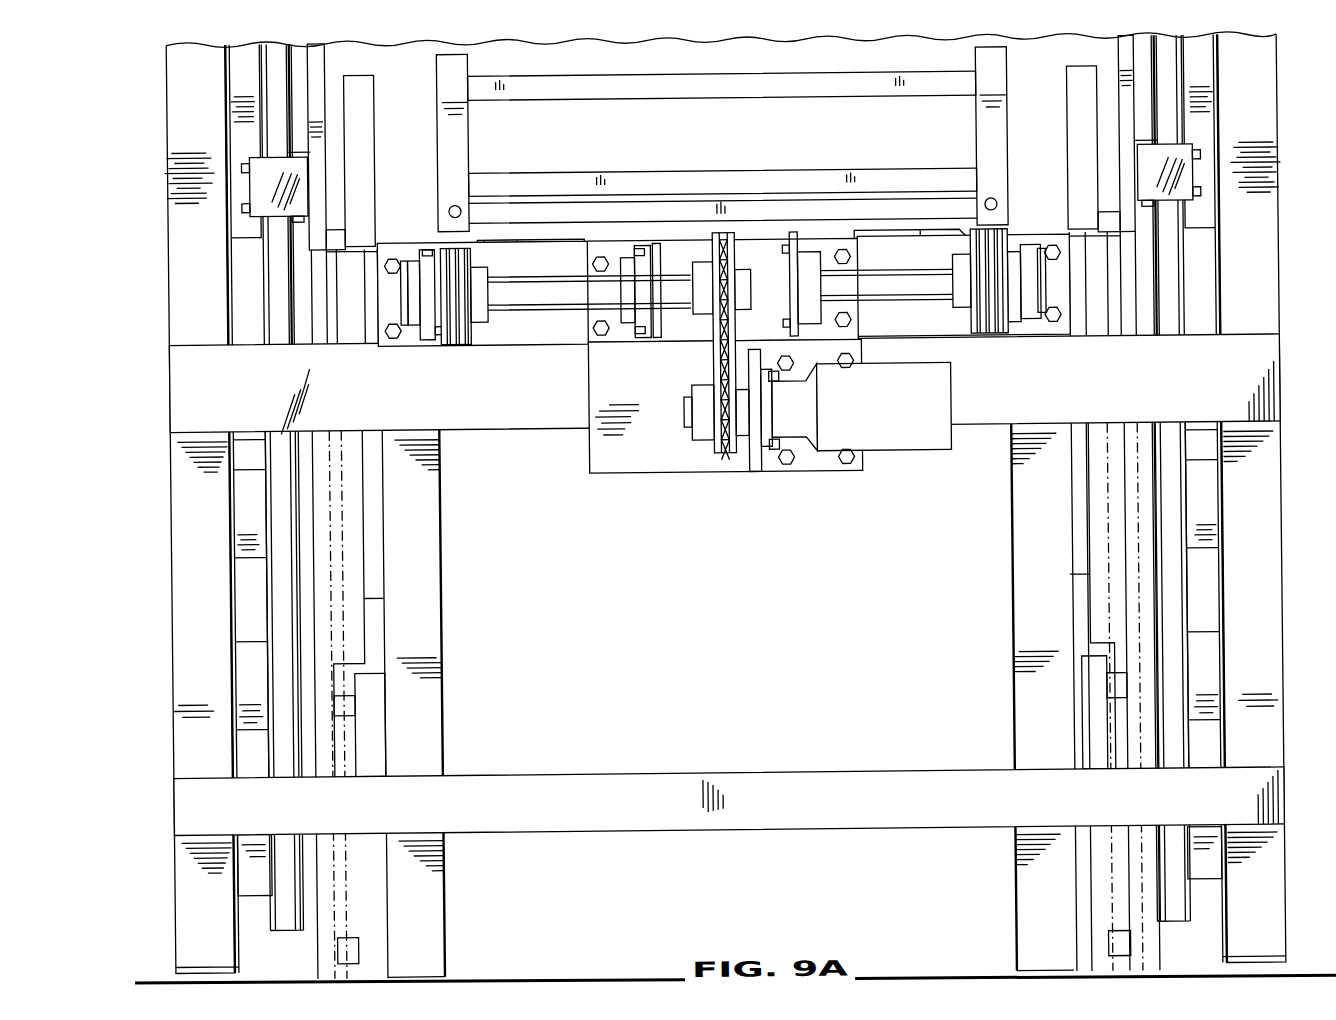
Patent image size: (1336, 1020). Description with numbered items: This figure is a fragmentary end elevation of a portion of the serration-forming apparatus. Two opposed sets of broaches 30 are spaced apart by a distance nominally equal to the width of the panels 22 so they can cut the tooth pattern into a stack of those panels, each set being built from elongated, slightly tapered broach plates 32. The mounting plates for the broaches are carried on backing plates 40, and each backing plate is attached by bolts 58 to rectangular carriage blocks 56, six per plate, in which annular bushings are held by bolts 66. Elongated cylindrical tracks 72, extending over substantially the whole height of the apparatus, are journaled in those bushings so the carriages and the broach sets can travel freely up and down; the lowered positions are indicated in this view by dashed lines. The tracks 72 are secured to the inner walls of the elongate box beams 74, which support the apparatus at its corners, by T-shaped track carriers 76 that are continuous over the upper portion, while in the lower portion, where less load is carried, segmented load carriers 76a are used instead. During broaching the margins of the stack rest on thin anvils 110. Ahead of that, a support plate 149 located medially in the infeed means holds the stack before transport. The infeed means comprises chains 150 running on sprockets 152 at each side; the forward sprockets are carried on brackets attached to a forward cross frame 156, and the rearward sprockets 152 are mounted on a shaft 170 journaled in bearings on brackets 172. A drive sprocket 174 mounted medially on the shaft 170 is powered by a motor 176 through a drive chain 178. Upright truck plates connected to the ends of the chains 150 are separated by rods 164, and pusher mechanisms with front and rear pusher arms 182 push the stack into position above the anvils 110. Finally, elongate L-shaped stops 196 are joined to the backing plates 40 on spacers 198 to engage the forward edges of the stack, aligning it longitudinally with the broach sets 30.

The panels 22 is at (362, 44).
The broaches 30 is at (366, 518).
The broach plates 32 is at (365, 594).
The backing plates 40 is at (324, 169).
The carriage blocks 56 is at (260, 176).
The bolts 58 is at (251, 196).
The bolts 66 is at (297, 144).
The tracks 72 is at (278, 596).
The box beams 74 is at (178, 67).
The track carriers 76 is at (256, 224).
The load carriers 76a is at (237, 308).
The anvils 110 is at (359, 276).
The support plate 149 is at (568, 236).
The chains 150 is at (462, 343).
The sprockets 152 is at (475, 325).
The forward cross frame 156 is at (552, 412).
The rods 164 is at (764, 84).
The shaft 170 is at (572, 289).
The brackets 172 is at (410, 330).
The drive sprocket 174 is at (714, 335).
The motor 176 is at (887, 435).
The drive chain 178 is at (723, 455).
The pusher arms 182 is at (458, 145).
The stops 196 is at (369, 181).
The spacers 198 is at (341, 233).